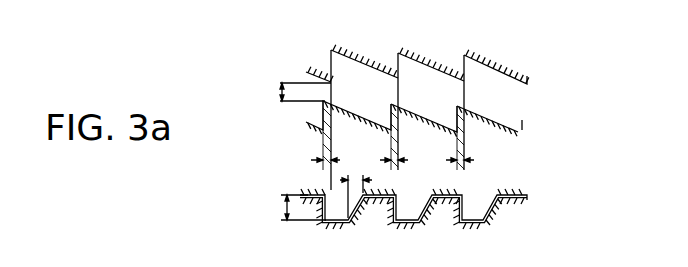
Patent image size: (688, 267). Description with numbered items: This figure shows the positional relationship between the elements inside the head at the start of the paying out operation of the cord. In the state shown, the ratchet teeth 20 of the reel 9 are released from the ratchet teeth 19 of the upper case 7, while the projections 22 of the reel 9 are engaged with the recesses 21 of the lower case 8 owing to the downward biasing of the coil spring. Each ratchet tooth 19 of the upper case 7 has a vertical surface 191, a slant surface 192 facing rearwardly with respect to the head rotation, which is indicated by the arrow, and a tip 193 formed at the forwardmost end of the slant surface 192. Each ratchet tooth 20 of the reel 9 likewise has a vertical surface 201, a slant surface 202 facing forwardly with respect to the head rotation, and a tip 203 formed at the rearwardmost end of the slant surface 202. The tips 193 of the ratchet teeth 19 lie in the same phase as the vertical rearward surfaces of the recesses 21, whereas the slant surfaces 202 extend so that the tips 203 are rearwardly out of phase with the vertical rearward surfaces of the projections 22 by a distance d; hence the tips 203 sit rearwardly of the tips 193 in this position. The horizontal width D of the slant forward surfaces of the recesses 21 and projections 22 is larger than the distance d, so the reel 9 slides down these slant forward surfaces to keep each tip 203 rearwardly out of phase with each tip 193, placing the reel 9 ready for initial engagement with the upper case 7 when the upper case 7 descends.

The upper case 7 is at (503, 24).
The lower case 8 is at (502, 217).
The reel 9 is at (516, 172).
The ratchet tooth 19 is at (459, 68).
The vertical surface 191 is at (469, 68).
The slant surface 192 is at (424, 32).
The tip 193 is at (465, 80).
The ratchet tooth 20 is at (476, 128).
The vertical surface 201 is at (455, 128).
The slant surface 202 is at (495, 118).
The tip 203 is at (454, 107).
The recess 21 is at (355, 210).
The projection 22 is at (331, 223).